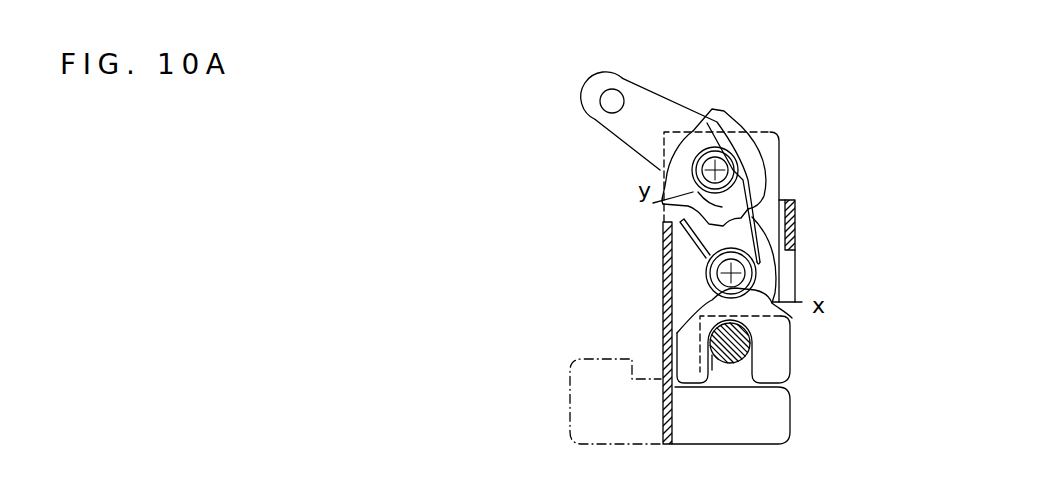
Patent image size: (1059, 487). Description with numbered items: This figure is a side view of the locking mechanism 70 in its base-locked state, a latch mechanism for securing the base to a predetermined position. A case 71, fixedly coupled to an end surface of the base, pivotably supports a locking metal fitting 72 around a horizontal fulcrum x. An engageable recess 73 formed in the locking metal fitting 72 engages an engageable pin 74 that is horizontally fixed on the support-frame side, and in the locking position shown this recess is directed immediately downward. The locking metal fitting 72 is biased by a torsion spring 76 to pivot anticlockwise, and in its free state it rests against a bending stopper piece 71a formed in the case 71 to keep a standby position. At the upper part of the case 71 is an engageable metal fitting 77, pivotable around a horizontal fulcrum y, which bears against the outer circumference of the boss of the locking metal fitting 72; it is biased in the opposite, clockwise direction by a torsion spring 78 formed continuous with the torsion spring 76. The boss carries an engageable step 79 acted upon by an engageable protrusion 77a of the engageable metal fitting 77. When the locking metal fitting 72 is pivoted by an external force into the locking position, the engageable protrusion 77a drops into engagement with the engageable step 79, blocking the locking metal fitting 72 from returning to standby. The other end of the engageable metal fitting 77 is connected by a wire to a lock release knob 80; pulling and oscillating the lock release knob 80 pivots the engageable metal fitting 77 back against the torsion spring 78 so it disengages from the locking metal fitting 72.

The locking mechanism 70 is at (571, 253).
The case 71 is at (793, 427).
The bending stopper piece 71a is at (793, 267).
The locking metal fitting 72 is at (780, 343).
The engageable recess 73 is at (720, 363).
The engageable pin 74 is at (733, 363).
The torsion spring 76 is at (677, 331).
The engageable metal fitting 77 is at (764, 162).
The engageable protrusion 77a is at (680, 258).
The torsion spring 78 is at (669, 152).
The engageable step 79 is at (667, 203).
The lock release knob 80 is at (611, 101).